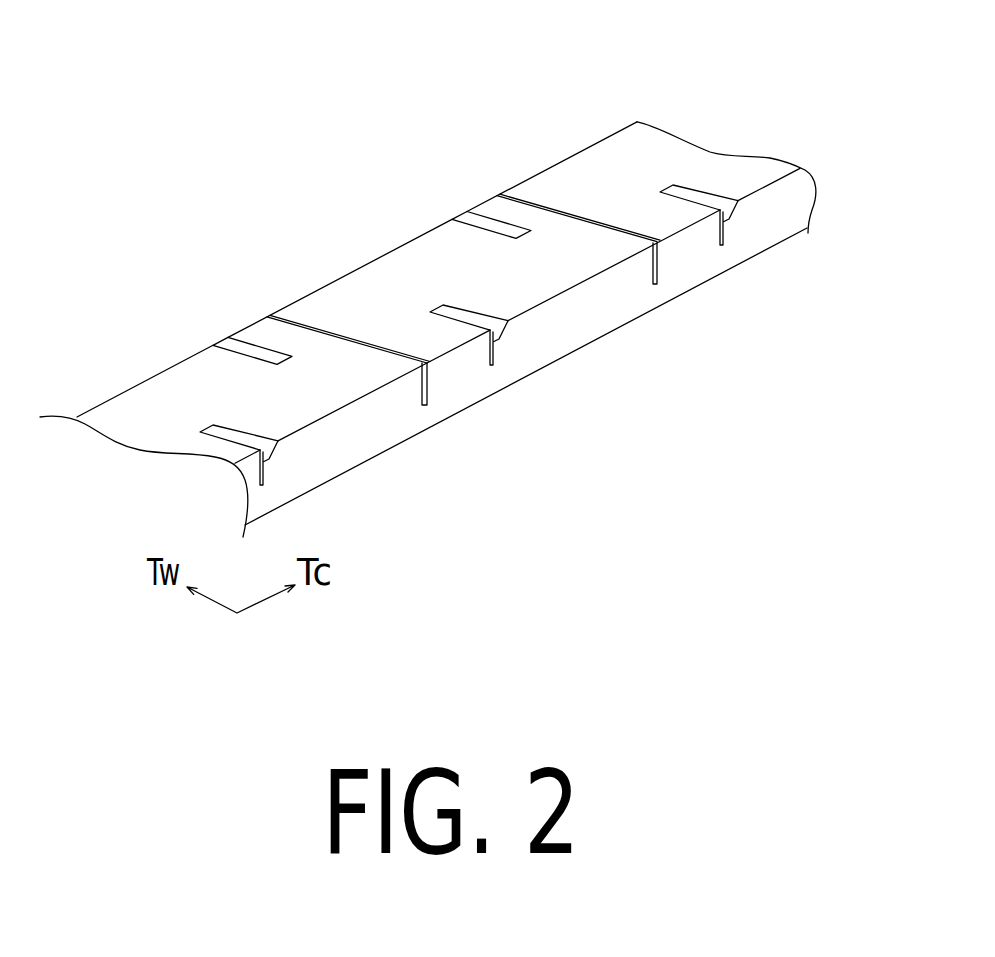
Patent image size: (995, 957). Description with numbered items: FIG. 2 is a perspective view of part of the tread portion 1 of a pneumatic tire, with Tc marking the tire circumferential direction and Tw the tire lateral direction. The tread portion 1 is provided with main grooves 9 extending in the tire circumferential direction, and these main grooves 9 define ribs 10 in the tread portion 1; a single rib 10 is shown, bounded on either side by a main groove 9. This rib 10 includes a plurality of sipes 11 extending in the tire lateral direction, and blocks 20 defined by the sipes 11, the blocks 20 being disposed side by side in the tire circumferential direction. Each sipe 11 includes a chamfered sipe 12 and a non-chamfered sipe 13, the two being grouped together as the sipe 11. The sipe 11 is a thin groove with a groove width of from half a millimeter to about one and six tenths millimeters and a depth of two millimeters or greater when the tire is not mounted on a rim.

The tread portion 1 is at (447, 273).
The main groove 9 is at (138, 378).
The rib 10 is at (447, 291).
The sipe 11 is at (458, 292).
The chamfered sipe 12 is at (451, 209).
The non-chamfered sipe 13 is at (430, 393).
The block 20 is at (357, 298).